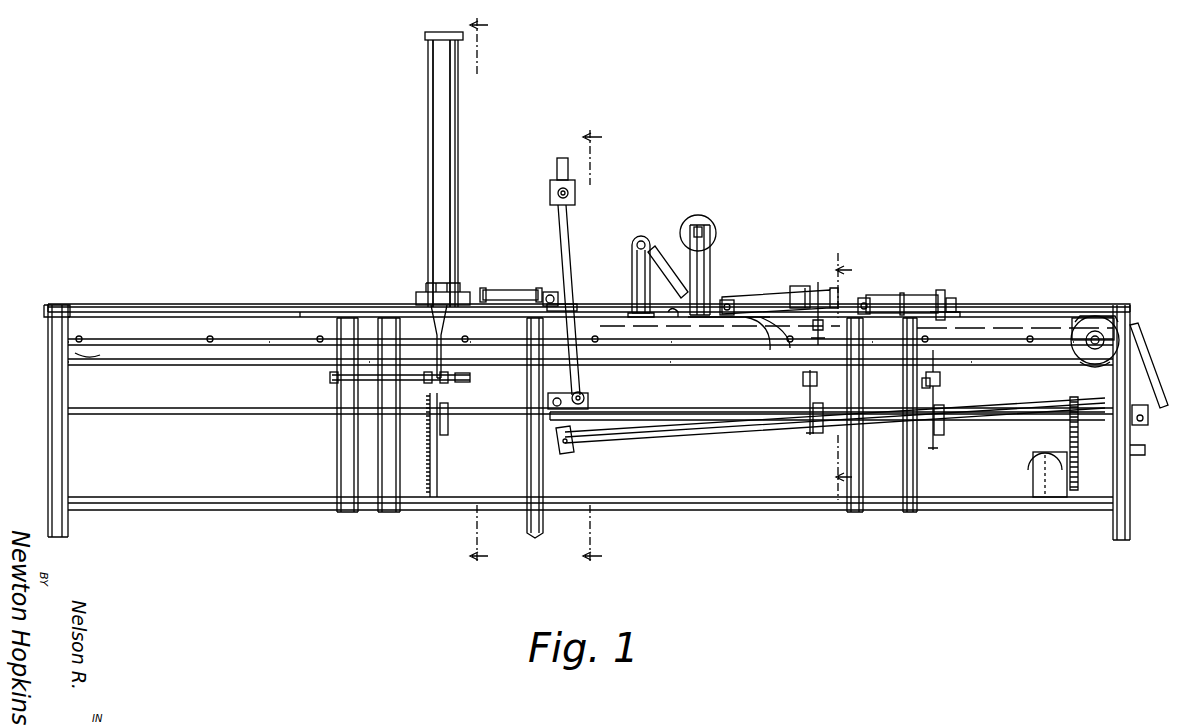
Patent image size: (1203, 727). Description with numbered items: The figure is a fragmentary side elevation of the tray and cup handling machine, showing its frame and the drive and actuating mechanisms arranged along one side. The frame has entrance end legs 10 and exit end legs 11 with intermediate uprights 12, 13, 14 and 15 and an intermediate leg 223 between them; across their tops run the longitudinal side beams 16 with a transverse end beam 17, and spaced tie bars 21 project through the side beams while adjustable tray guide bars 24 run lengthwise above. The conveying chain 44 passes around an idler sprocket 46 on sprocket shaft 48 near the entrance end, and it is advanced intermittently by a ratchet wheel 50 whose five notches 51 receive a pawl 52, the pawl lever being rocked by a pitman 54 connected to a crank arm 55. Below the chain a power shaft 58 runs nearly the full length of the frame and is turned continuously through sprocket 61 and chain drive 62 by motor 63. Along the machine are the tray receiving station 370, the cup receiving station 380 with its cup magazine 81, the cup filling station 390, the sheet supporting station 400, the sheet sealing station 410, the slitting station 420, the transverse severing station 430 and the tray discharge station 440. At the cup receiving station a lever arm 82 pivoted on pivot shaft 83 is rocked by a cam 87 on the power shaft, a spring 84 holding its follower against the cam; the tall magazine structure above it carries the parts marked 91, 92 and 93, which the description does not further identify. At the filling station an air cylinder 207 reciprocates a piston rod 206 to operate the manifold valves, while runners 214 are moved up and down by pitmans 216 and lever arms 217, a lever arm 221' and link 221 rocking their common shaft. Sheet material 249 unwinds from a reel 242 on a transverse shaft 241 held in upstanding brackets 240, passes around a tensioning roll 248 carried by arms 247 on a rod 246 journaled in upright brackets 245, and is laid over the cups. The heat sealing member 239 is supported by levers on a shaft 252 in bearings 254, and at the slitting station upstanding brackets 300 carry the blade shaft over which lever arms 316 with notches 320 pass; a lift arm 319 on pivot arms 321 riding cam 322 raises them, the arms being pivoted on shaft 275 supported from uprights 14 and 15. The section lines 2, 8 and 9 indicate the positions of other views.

The entrance end legs 10 is at (65, 428).
The exit end legs 11 is at (1118, 522).
The intermediate upright 12 is at (340, 455).
The intermediate upright 13 is at (390, 512).
The intermediate upright 14 is at (855, 512).
The intermediate upright 15 is at (905, 512).
The side beams 16 is at (302, 312).
The end beam 17 is at (44, 310).
The tie bars 21 is at (213, 336).
The tray guide bars 24 is at (170, 312).
The conveying chain 44 is at (235, 367).
The idler sprocket 46 is at (92, 372).
The sprocket shaft 48 is at (82, 336).
The ratchet wheel 50 is at (1105, 318).
The notches 51 is at (1082, 365).
The pawl 52 is at (1072, 340).
The pitman 54 is at (1152, 358).
The crank arm 55 is at (1150, 418).
The power shaft 58 is at (686, 412).
The sprocket 61 is at (1076, 397).
The chain drive 62 is at (1078, 430).
The motor 63 is at (1030, 468).
The cup magazine 81 is at (418, 152).
The lever arm 82 is at (416, 300).
The pivot shaft 83 is at (460, 380).
The spring 84 is at (436, 475).
The cam 87 is at (445, 440).
The mast column 91 is at (428, 90).
The mast lower rod 92 is at (438, 205).
The mast cap 93 is at (425, 36).
The piston rod 206 is at (545, 290).
The air cylinder 207 is at (512, 290).
The runners 214 is at (552, 190).
The pitmans 216 is at (575, 215).
The lever arms 217 is at (582, 395).
The link 221 is at (835, 433).
The lever arm 221' is at (586, 450).
The intermediate leg 223 is at (528, 450).
The heat sealing member 239 is at (806, 265).
The upstanding brackets 240 is at (704, 278).
The transverse shaft 241 is at (710, 255).
The reel or roll 242 is at (712, 222).
The upright brackets 245 is at (634, 298).
The transverse rod 246 is at (640, 245).
The arms 247 is at (662, 245).
The tensioning roll 248 is at (692, 320).
The sheet material 249 is at (816, 292).
The shaft 252 is at (740, 290).
The bearings 254 is at (766, 345).
The shaft 275 is at (803, 380).
The upstanding brackets 300 is at (930, 290).
The lever arms 316 is at (950, 292).
The lift arm 319 is at (945, 370).
The notches 320 is at (1000, 330).
The pivot arms 321 is at (945, 384).
The cam 322 is at (942, 430).
The tray receiving station 370 is at (115, 307).
The cup receiving station 380 is at (430, 292).
The cup filling station 390 is at (630, 280).
The sheet supporting station 400 is at (668, 320).
The sheet sealing station 410 is at (800, 290).
The slitting station 420 is at (895, 295).
The transverse severing station 430 is at (945, 312).
The tray discharge station 440 is at (1078, 315).
The section line 2- 2 is at (486, 292).
The section line 8- 8 is at (596, 347).
The section line 9- 9 is at (834, 376).